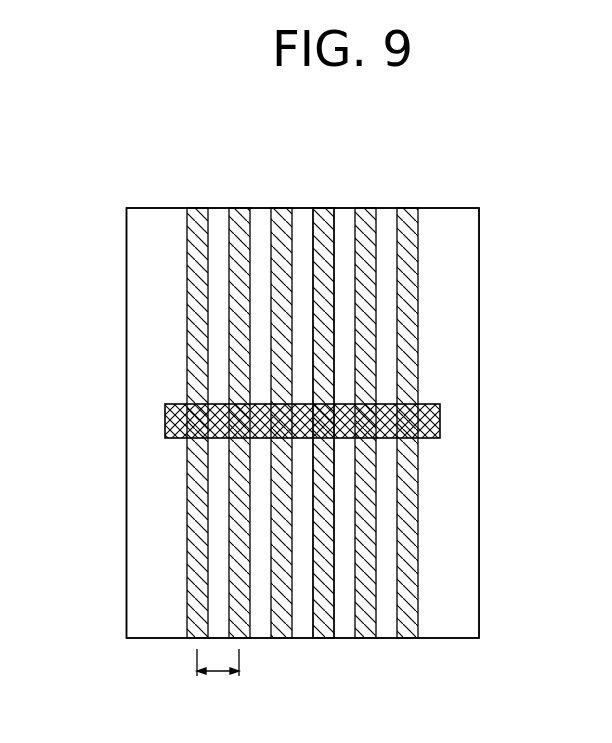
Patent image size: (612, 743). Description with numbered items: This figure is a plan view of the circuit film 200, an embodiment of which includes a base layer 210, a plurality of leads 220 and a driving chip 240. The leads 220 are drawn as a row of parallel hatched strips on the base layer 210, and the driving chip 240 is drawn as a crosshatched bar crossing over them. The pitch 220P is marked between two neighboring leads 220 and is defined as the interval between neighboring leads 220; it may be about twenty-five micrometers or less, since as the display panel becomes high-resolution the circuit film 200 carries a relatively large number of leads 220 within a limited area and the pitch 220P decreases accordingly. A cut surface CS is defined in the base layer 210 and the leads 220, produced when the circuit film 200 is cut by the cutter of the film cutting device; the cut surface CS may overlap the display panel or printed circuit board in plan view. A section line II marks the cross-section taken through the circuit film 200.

The circuit film 200 is at (508, 188).
The base layer 210 is at (143, 492).
The leads 220 is at (187, 563).
The pitch 220P is at (217, 680).
The driving chip 240 is at (165, 418).
The cut surface CS is at (322, 639).
The section line II-II' II is at (440, 420).